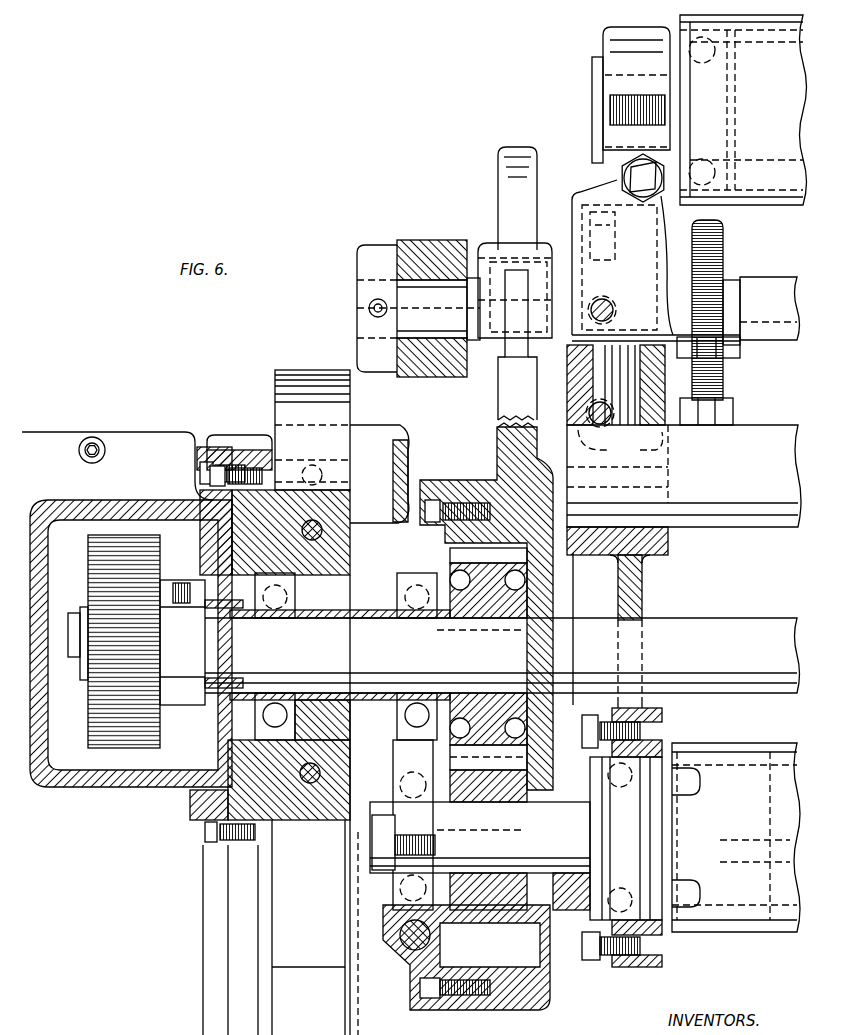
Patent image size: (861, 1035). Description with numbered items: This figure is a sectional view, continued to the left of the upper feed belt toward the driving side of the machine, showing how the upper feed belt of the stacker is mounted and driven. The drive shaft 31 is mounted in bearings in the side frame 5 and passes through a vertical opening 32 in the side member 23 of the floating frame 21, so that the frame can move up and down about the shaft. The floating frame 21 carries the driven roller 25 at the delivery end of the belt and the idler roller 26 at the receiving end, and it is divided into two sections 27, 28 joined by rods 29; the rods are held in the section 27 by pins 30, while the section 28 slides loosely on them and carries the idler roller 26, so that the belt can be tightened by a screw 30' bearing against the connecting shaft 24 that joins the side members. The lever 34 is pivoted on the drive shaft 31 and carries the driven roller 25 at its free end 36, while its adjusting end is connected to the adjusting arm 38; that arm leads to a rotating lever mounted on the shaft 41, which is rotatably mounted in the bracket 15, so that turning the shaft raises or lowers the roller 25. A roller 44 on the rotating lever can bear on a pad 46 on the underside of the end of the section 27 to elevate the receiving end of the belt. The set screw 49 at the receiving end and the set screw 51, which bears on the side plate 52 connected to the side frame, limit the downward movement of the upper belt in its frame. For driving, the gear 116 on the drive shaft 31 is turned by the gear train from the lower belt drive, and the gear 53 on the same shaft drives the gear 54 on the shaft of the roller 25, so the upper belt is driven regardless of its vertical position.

The side frame 5 is at (300, 368).
The bracket 15 is at (428, 238).
The floating frame 21 is at (595, 189).
The side member 23 is at (645, 580).
The connecting shaft 24 is at (772, 434).
The driven roller 25 is at (736, 837).
The idler roller 26 is at (743, 110).
The section 27 is at (672, 550).
The section 28 is at (671, 292).
The rod 29 is at (625, 345).
The pin 30 is at (700, 393).
The screw 30' is at (734, 310).
The drive shaft 31 is at (767, 620).
The vertical opening 32 is at (620, 612).
The lever 34 is at (505, 393).
The free end 36 is at (545, 1000).
The adjusting arm 38 is at (516, 150).
The shaft 41 is at (773, 283).
The roller 44 is at (641, 340).
The pad 46 is at (620, 445).
The set screw 49 is at (646, 172).
The set screw 51 is at (405, 952).
The side plate 52 is at (382, 933).
The gear 53 is at (488, 559).
The gear 54 is at (483, 790).
The gear 116 is at (163, 722).